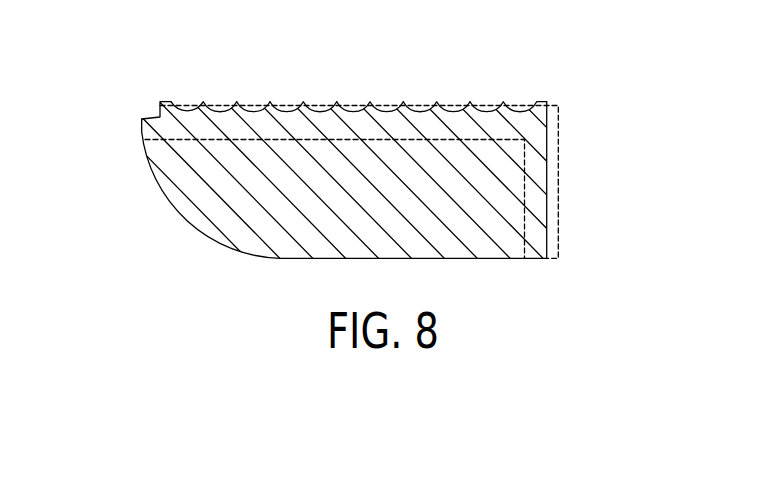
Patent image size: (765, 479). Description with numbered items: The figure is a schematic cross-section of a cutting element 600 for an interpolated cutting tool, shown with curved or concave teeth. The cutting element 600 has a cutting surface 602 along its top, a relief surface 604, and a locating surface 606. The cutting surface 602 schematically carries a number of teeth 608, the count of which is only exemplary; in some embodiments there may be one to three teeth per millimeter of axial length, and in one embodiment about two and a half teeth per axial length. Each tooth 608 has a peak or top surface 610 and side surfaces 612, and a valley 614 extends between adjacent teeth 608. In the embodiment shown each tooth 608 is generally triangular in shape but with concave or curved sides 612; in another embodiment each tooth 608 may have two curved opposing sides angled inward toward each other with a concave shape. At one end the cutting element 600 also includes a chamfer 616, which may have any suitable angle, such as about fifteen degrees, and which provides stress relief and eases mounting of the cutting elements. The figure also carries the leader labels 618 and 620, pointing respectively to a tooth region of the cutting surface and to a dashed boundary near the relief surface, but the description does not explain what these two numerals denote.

The cutting element 600 is at (137, 165).
The cutting surface 602 is at (210, 103).
The relief surface 604 is at (560, 153).
The locating surface 606 is at (227, 140).
The teeth 608 is at (237, 103).
The top surface 610 is at (302, 103).
The side surfaces 612 is at (397, 104).
The valley 614 is at (448, 104).
The chamfer 616 is at (148, 117).
The cutting edge projection 618 is at (508, 103).
The outer side boundary (dashed) 620 is at (560, 225).